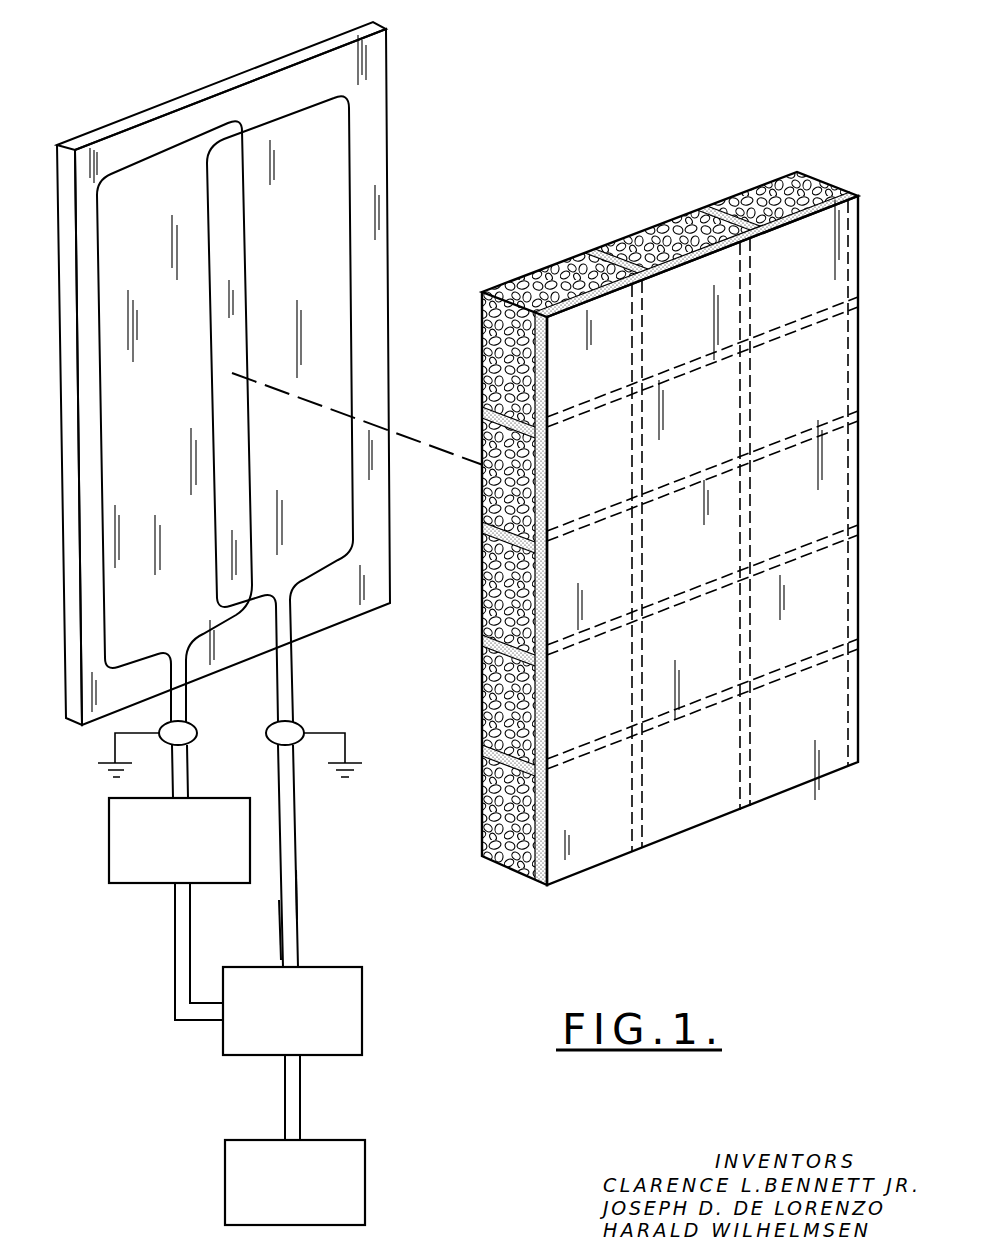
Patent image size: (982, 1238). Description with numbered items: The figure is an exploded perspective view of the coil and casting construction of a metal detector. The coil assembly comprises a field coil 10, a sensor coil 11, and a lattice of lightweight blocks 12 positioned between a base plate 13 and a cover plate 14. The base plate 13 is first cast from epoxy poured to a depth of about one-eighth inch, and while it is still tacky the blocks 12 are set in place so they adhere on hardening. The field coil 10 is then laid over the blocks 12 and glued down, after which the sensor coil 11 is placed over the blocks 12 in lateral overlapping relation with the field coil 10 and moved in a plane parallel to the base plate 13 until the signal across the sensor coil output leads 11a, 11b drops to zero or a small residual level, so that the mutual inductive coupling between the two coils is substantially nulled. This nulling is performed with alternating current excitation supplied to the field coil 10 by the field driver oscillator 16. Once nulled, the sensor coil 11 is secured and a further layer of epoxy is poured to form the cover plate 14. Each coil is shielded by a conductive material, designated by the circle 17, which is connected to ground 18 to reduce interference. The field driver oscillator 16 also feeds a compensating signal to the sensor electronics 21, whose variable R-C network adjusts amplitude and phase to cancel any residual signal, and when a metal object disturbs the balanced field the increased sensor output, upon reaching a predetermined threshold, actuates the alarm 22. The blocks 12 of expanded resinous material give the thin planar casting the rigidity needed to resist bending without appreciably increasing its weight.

The field coil 10 is at (181, 140).
The sensor coil 11 is at (350, 140).
The sensor coil output lead 11a is at (280, 930).
The sensor coil output lead 11b is at (297, 887).
The lattice of lightweight blocks 12 is at (680, 217).
The base plate 13 is at (727, 815).
The cover plate 14 is at (78, 133).
The field driver oscillator 16 is at (109, 857).
The conductive shield 17 is at (193, 723).
The ground 18 is at (102, 763).
The sensor electronics 21 is at (362, 993).
The alarm 22 is at (365, 1165).